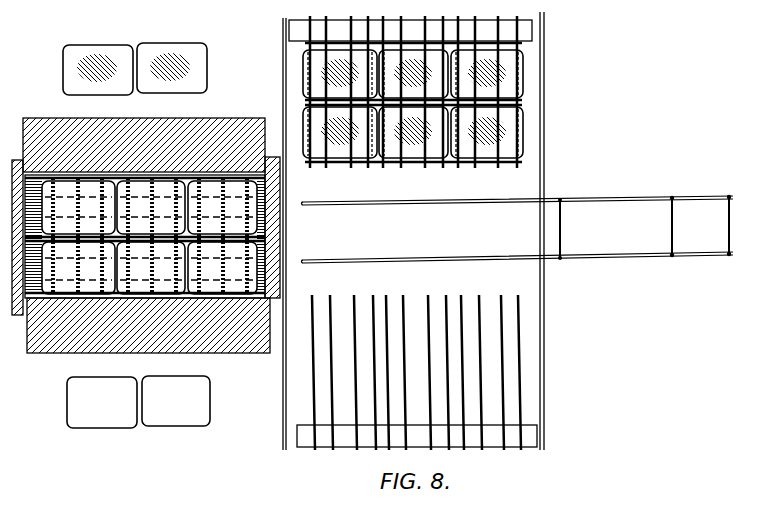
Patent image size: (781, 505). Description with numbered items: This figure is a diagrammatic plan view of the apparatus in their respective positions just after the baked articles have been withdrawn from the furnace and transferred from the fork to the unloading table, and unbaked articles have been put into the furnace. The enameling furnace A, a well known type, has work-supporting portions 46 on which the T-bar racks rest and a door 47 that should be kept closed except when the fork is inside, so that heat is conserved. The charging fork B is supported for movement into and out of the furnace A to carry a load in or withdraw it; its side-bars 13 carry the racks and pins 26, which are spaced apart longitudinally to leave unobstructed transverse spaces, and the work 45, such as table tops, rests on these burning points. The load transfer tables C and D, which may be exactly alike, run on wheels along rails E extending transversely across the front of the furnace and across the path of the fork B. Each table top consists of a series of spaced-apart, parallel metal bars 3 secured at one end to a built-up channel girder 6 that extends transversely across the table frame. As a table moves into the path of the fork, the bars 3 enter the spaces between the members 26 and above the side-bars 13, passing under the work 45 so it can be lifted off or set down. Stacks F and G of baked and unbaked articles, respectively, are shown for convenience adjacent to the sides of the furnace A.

The metal bars 3 is at (475, 164).
The channel girder 6 is at (289, 30).
The side-bars of the charging fork 13 is at (428, 206).
The racks and pins 26 is at (224, 178).
The work 45 is at (237, 283).
The work-supporting portions of the furnace 46 is at (35, 195).
The door of the furnace 47 is at (283, 187).
The enameling furnace A is at (141, 245).
The charging fork B is at (644, 227).
The unloading table C is at (532, 30).
The loading table D is at (537, 432).
The rails E is at (548, 325).
The stack of baked articles F is at (135, 58).
The stack of unbaked articles G is at (138, 417).